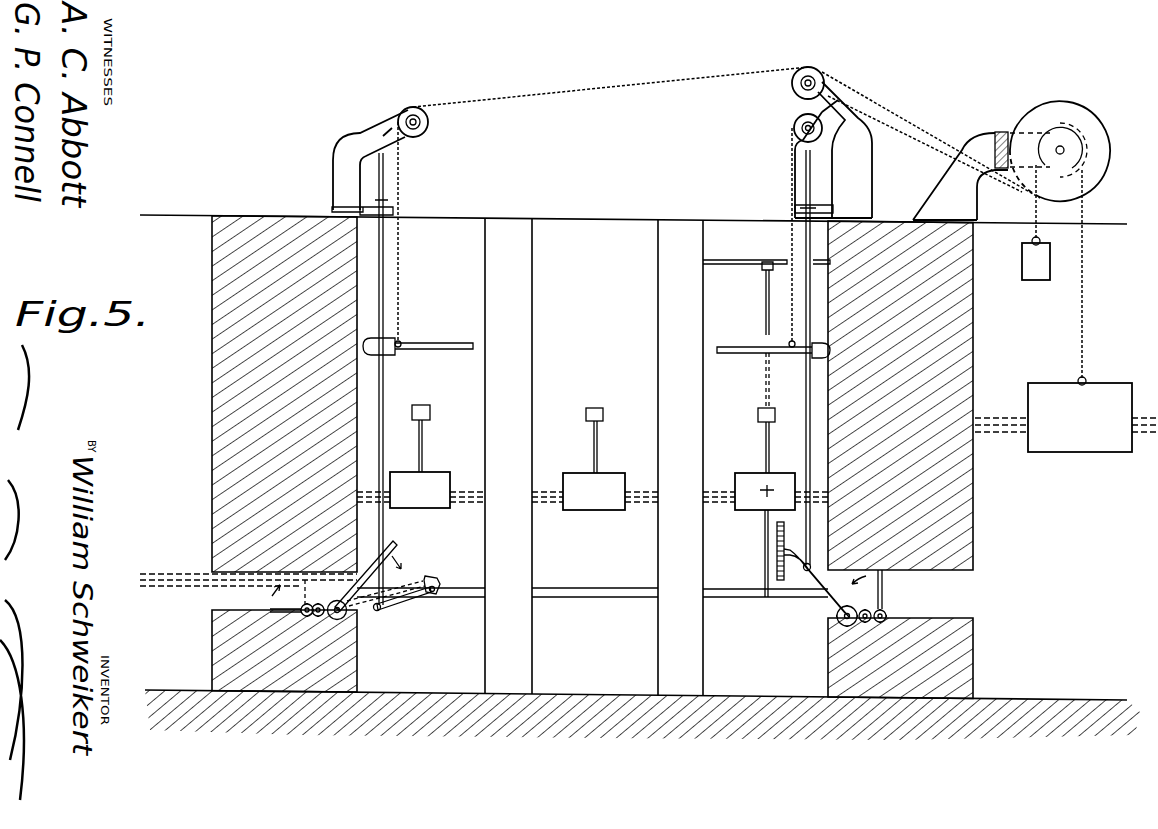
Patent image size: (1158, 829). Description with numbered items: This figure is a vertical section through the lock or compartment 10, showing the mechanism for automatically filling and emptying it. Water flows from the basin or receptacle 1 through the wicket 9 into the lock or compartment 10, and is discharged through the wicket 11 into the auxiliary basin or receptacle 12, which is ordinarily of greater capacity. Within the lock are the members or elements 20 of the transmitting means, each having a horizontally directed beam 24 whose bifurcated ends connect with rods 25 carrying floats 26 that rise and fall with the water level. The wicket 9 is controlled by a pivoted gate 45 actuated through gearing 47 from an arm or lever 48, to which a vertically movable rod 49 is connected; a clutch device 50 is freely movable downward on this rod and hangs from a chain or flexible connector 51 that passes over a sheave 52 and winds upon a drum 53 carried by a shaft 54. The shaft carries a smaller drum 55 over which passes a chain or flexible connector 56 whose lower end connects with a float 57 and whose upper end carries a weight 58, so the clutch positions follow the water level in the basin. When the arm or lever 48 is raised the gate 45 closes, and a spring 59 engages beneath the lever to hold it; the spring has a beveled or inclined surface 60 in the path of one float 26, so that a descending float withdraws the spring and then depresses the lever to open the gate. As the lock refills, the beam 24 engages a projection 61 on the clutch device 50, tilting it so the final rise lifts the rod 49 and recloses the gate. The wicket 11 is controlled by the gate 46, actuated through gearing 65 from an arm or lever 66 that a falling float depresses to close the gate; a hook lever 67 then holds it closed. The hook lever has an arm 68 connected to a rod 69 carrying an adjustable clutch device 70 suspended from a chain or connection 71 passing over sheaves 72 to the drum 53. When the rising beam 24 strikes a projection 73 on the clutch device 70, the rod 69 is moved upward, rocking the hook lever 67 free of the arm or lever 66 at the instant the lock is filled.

The basin or receptacle 1 is at (1077, 542).
The wicket 9 is at (970, 585).
The lock or compartment 10 is at (593, 280).
The wicket 11 is at (222, 578).
The auxiliary basin or receptacle 12 is at (168, 434).
The members or elements of the transmitting means 20 is at (543, 451).
The beam 24 is at (430, 405).
The rods 25 is at (424, 440).
The floats 26 is at (740, 500).
The gate 45 is at (886, 588).
The gate 46 is at (270, 609).
The gearing 47 is at (843, 626).
The arm or lever 48 is at (813, 582).
The vertically movable rod 49 is at (806, 416).
The clutch device 50 is at (792, 358).
The chain or flexible connector 51 is at (792, 173).
The sheave 52 is at (810, 116).
The drum 53 is at (1097, 126).
The shaft 54 is at (1062, 146).
The smaller drum 55 is at (1048, 130).
The chain or flexible connector 56 is at (1084, 278).
The float 57 is at (1080, 414).
The weight 58 is at (1040, 273).
The spring 59 is at (770, 572).
The beveled or inclined surface 60 is at (777, 527).
The projection 61 is at (746, 330).
The gearing 65 is at (345, 618).
The arm or lever 66 is at (400, 543).
The hook lever 67 is at (437, 576).
The arm 68 is at (410, 600).
The rod 69 is at (388, 373).
The clutch device 70 is at (382, 333).
The chain or connection 71 is at (398, 252).
The sheaves 72 is at (428, 123).
The projection 73 is at (445, 340).